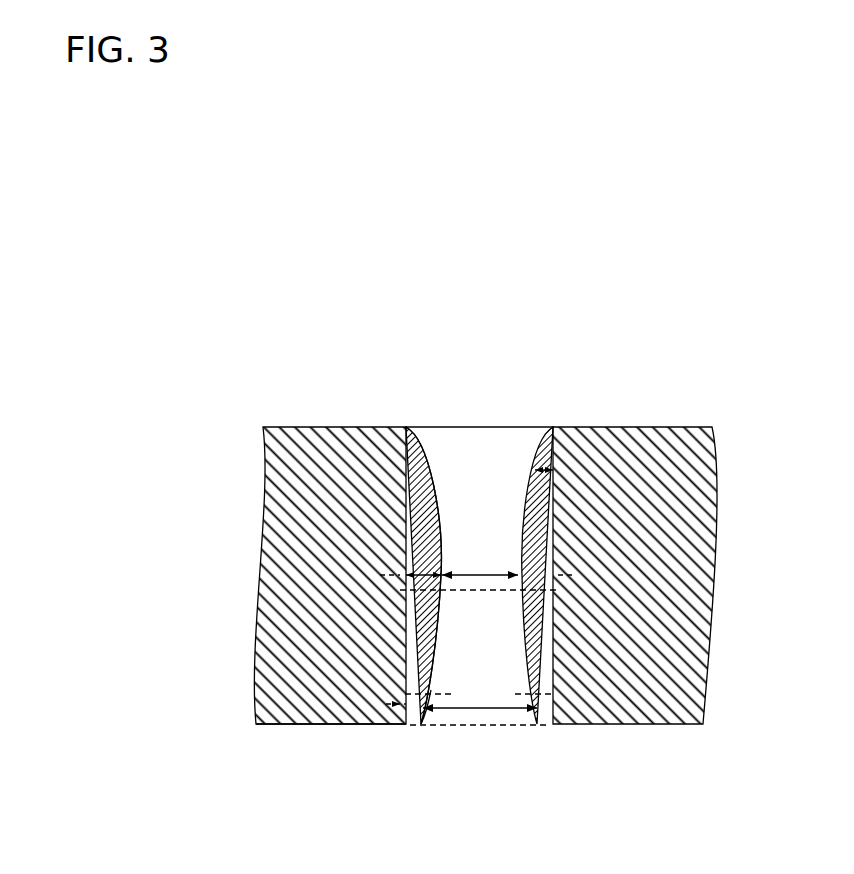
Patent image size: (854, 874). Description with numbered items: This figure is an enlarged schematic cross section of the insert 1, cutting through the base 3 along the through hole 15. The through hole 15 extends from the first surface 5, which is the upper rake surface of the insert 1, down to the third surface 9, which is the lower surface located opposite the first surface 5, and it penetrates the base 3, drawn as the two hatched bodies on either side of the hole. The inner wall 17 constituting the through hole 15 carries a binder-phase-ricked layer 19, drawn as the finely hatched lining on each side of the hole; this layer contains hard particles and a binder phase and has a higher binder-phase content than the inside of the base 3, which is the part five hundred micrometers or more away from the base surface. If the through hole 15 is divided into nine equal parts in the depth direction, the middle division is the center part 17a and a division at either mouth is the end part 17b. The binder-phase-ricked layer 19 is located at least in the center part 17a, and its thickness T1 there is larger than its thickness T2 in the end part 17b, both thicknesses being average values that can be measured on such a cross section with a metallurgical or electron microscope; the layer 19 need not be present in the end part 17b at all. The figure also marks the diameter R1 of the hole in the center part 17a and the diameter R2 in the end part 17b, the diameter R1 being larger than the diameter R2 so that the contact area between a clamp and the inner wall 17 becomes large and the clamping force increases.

The insert 1 is at (298, 406).
The base 3 is at (300, 582).
The first surface 5 is at (661, 427).
The third surface 9 is at (327, 725).
The through hole 15 is at (485, 512).
The inner wall 17 is at (433, 478).
The center part 17a is at (520, 580).
The end part 17b is at (535, 710).
The binder-phase-ricked layer 19 is at (530, 500).
The thickness of binder-phase-ricked layer in center part T1 is at (376, 470).
The thickness of binder-phase-ricked layer in end part T2 is at (545, 468).
The diameter in center part R1 is at (477, 565).
The diameter in end part R2 is at (470, 692).